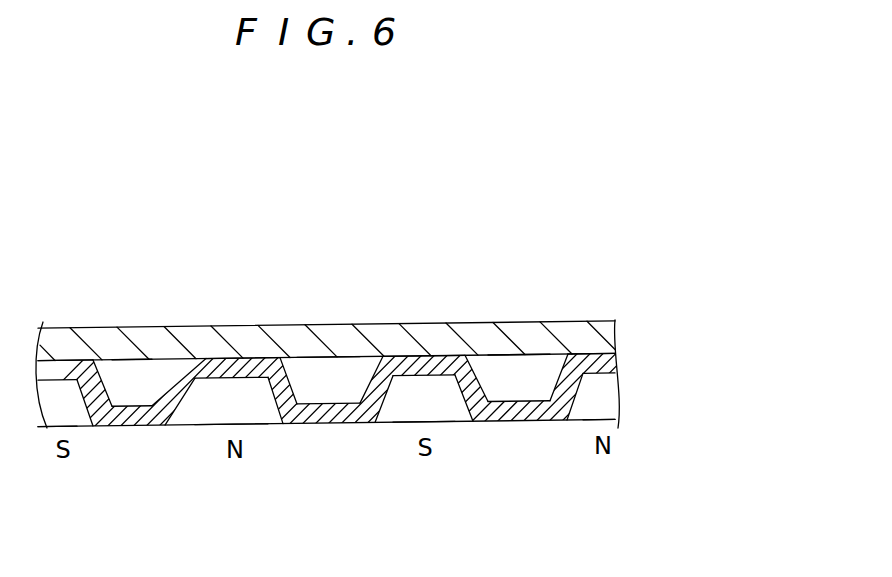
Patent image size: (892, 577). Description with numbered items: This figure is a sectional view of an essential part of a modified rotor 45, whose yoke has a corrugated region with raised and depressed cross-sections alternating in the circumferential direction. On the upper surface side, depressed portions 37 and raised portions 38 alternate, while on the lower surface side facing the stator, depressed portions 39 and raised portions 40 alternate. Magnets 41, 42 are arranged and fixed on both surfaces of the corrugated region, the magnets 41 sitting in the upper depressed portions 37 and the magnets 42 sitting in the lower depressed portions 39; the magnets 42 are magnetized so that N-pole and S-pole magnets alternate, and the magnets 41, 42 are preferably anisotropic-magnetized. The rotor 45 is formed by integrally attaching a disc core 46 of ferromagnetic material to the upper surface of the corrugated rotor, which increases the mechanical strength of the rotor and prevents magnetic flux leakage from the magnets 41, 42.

The depressed portion 37 is at (184, 377).
The raised portion 38 is at (237, 357).
The depressed portion 39 is at (201, 415).
The raised portion 40 is at (130, 414).
The magnet 41 is at (142, 370).
The magnet 42 is at (67, 412).
The rotor 45 is at (570, 312).
The disc core 46 is at (381, 343).